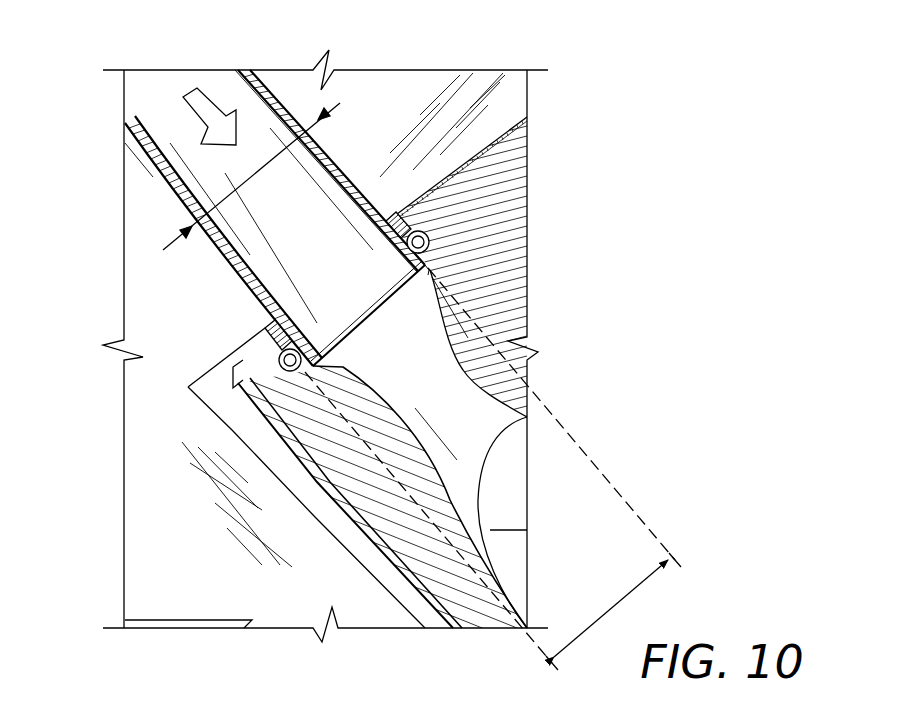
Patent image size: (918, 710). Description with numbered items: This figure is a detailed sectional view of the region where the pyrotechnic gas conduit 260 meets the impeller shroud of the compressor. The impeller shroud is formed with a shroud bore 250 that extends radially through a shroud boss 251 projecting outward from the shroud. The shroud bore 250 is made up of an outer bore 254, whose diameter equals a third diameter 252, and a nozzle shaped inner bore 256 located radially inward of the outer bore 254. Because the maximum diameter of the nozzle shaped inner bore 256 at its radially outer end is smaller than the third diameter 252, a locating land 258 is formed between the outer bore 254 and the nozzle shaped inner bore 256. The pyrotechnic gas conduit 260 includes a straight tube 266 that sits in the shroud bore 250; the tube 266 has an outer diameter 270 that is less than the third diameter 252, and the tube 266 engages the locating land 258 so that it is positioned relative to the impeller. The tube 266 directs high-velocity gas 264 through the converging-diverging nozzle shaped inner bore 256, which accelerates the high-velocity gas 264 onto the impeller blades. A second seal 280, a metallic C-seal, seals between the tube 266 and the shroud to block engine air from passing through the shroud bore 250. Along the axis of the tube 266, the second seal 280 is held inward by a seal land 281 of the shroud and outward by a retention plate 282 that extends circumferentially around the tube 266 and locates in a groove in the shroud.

The shroud bore 250 is at (267, 322).
The shroud boss 251 is at (490, 183).
The third diameter 252 is at (607, 613).
The outer bore 254 is at (440, 247).
The nozzle shaped inner bore 256 is at (437, 380).
The locating land 258 is at (431, 253).
The pyrotechnic gas conduit 260 is at (287, 83).
The high-velocity gas 264 is at (190, 97).
The tube 266 is at (334, 164).
The outer diameter 270 is at (236, 202).
The second seal 280 is at (432, 236).
The seal land 281 is at (296, 357).
The retention plate 282 is at (418, 222).